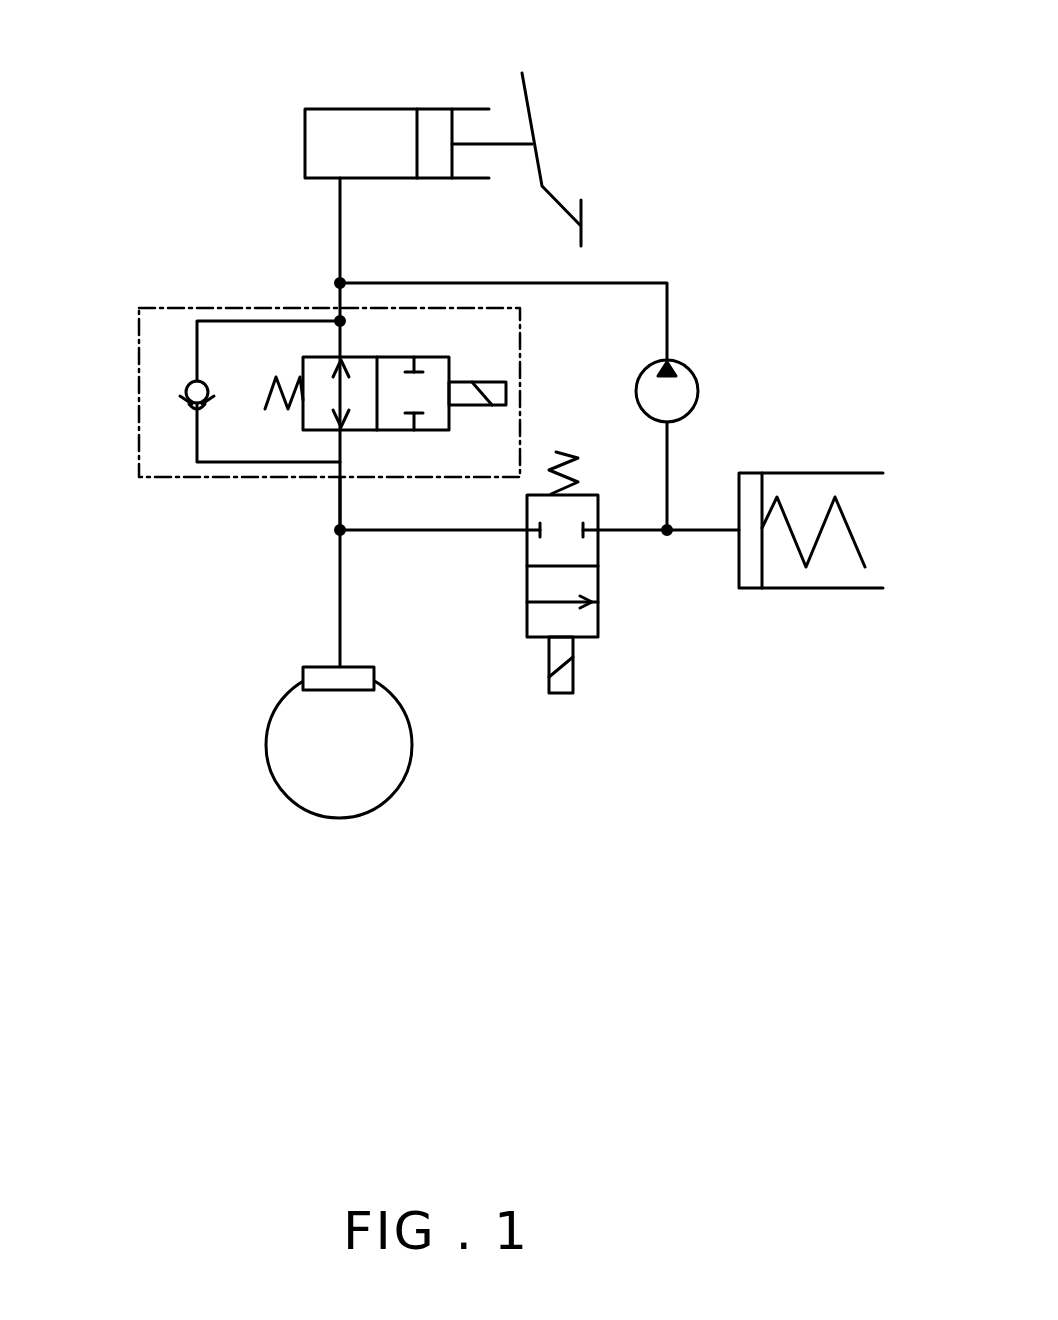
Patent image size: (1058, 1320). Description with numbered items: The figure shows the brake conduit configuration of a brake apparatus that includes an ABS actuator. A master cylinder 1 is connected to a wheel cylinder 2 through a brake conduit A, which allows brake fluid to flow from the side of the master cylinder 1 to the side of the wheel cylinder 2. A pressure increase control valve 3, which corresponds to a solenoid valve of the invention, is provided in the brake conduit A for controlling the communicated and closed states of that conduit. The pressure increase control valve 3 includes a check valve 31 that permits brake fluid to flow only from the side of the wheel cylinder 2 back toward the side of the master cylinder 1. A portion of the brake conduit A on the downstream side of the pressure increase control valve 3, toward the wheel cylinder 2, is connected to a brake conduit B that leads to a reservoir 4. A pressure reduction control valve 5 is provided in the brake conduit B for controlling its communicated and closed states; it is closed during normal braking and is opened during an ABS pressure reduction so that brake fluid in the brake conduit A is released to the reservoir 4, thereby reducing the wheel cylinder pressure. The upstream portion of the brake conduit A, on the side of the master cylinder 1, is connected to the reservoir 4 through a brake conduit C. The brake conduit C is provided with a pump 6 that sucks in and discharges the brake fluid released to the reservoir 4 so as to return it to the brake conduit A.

The master cylinder 1 is at (374, 108).
The wheel cylinder 2 is at (322, 667).
The pressure increase control valve 3 is at (254, 306).
The check valve 31 is at (185, 391).
The reservoir 4 is at (805, 473).
The pressure reduction control valve 5 is at (598, 582).
The pump 6 is at (690, 364).
The brake conduit A is at (339, 502).
The brake conduit B is at (420, 531).
The brake conduit C is at (643, 283).